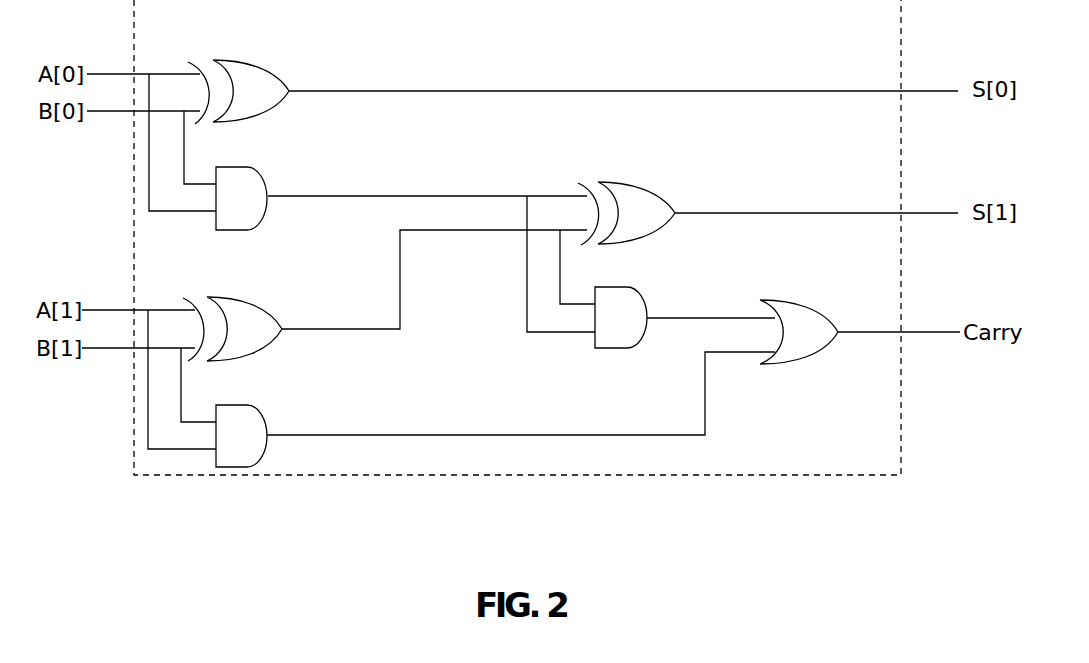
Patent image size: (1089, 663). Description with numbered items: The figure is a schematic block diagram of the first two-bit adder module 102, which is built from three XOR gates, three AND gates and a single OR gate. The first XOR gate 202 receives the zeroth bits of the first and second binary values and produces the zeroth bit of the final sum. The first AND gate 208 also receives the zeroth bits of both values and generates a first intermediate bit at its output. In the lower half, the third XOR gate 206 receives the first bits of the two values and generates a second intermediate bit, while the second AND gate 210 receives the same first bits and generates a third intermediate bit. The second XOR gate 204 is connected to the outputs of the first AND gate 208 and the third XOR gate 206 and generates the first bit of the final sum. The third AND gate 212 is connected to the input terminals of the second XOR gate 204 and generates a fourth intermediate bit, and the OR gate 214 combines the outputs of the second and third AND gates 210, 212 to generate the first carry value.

The first two-bit adder module 102 is at (517, 475).
The first XOR gate 202 is at (263, 62).
The second XOR gate 204 is at (627, 183).
The third XOR gate 206 is at (258, 297).
The first AND gate 208 is at (263, 167).
The second AND gate 210 is at (253, 405).
The third AND gate 212 is at (613, 287).
The OR gate 214 is at (792, 302).